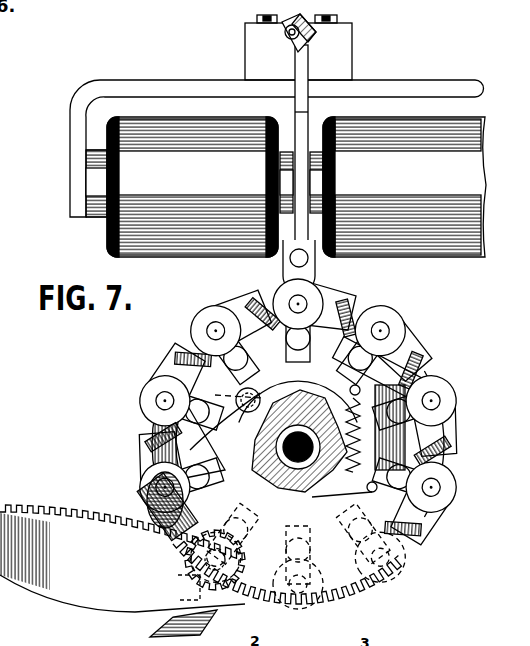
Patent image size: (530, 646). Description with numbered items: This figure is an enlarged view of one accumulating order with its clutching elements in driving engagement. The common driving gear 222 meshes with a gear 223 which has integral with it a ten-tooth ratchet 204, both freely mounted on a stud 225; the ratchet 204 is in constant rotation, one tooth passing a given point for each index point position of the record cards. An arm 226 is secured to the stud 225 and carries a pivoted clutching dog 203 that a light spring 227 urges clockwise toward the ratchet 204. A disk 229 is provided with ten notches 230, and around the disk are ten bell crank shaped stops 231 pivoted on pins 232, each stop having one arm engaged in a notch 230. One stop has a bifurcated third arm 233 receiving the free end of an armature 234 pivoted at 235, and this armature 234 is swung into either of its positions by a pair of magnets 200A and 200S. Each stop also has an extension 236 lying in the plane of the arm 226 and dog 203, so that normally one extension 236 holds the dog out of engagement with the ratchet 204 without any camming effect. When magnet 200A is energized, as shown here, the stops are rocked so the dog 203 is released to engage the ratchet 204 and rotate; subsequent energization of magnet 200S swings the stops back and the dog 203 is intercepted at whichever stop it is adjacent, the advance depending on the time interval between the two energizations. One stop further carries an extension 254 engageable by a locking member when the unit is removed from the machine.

The magnet 200A is at (192, 187).
The magnet 200S is at (404, 187).
The clutching dog 203 is at (318, 382).
The ten-tooth ratchet 204 is at (375, 398).
The large gear 222 is at (20, 528).
The gear 223 is at (158, 525).
The stud 225 is at (200, 492).
The arm 226 is at (162, 450).
The spring 227 is at (368, 452).
The disk 229 is at (400, 441).
The notches 230 is at (343, 329).
The bell crank shaped stops 231 is at (352, 284).
The pins 232 is at (434, 489).
The third arm 233 is at (280, 282).
The armature 234 is at (303, 122).
The pivot 235 is at (284, 36).
The extension 236 is at (190, 348).
The extension 254 is at (185, 580).